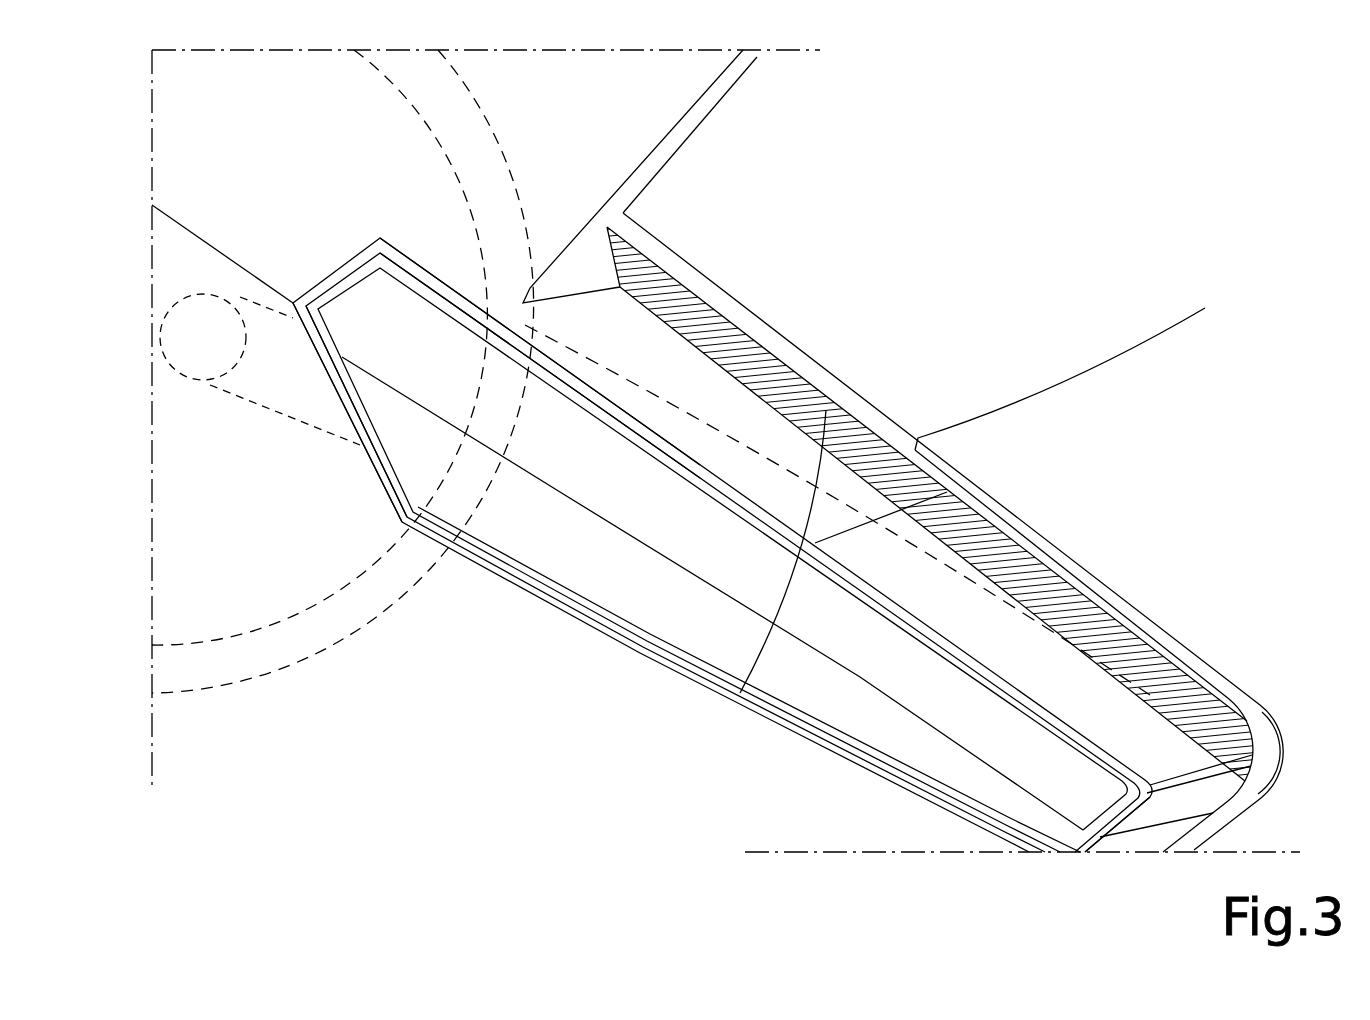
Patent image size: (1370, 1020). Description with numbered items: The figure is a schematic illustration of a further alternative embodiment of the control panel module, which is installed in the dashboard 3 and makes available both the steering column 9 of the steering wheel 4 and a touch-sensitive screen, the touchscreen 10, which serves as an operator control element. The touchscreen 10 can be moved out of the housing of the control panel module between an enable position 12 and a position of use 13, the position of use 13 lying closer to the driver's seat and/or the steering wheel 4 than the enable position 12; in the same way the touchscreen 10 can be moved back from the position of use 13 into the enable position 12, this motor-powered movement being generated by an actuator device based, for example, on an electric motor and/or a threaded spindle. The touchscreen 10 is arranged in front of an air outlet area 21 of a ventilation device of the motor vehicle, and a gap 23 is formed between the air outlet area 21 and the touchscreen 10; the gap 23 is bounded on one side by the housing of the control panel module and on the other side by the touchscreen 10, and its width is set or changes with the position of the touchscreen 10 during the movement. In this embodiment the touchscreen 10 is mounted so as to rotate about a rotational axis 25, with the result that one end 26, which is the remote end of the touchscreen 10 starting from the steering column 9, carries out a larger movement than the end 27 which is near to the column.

The dashboard 3 is at (1083, 372).
The steering wheel 4 is at (527, 165).
The steering column 9 is at (262, 395).
The touchscreen 10 is at (760, 555).
The enable position 12 is at (1107, 653).
The position of use 13 is at (1120, 757).
The air outlet area 21 is at (1033, 543).
The gap 23 is at (360, 447).
The rotational axis 25 is at (488, 350).
The end 26 is at (1277, 762).
The end 27 is at (420, 262).